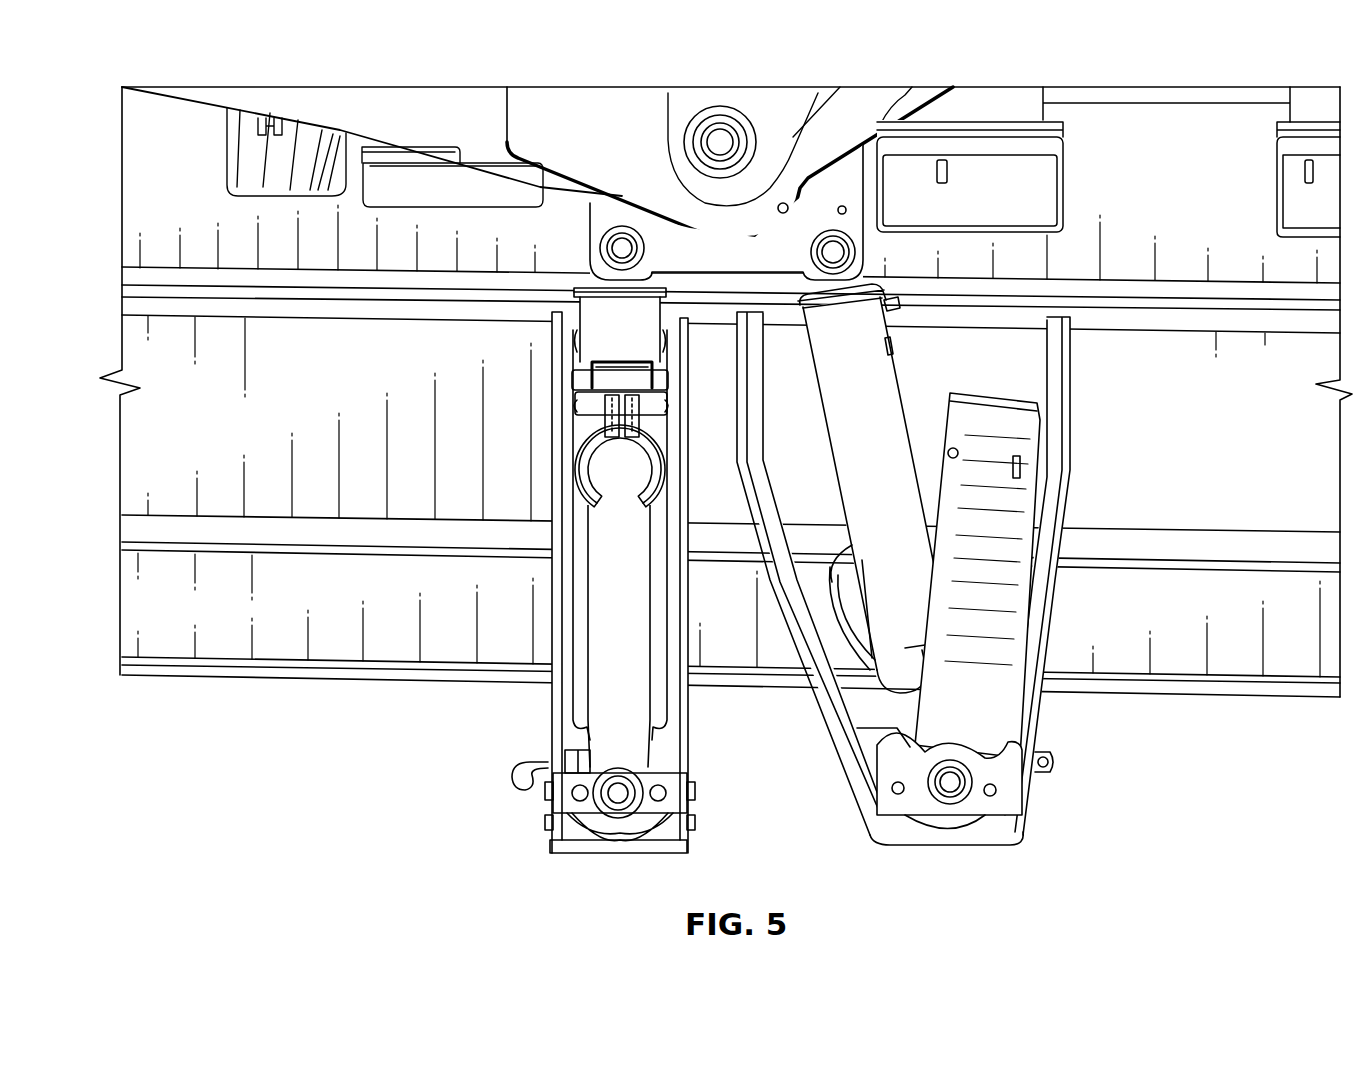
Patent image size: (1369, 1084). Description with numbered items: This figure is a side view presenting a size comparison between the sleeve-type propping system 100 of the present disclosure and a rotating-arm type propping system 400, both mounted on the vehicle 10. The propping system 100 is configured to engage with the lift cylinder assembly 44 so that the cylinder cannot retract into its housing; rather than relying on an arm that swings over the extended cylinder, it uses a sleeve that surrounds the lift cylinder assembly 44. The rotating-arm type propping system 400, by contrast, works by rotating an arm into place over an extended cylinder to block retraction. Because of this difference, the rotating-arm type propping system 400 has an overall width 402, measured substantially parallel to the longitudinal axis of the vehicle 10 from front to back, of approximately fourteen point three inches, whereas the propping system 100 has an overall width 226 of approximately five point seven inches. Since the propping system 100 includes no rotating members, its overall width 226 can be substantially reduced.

The vehicle 10 is at (117, 228).
The lift cylinder assembly 44 is at (596, 342).
The propping system 100 is at (550, 559).
The overall width 226 is at (688, 537).
The rotating-arm type propping system 400 is at (991, 677).
The overall width 402 is at (740, 388).